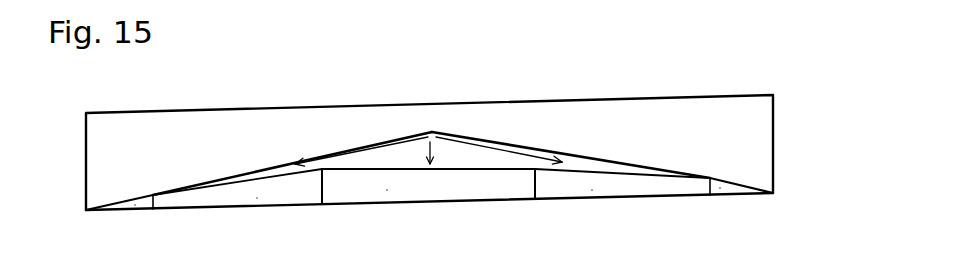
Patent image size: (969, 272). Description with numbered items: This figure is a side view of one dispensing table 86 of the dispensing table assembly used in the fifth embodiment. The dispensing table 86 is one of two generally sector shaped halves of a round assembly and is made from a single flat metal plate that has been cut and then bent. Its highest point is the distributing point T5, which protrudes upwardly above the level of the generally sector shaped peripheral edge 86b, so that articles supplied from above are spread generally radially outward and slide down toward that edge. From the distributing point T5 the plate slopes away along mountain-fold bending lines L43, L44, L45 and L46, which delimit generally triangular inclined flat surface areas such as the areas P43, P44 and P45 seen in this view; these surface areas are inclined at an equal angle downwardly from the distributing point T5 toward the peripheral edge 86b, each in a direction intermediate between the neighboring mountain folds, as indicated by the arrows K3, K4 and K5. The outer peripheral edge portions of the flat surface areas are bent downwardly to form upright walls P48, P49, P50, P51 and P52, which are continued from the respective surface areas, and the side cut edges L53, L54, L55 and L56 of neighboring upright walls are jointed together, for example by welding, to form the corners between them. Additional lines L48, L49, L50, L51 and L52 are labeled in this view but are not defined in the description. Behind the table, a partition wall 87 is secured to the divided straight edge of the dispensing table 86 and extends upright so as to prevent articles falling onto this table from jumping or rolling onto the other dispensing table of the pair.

The dispensing table 86 is at (429, 170).
The sector shaped peripheral edge 86b is at (453, 203).
The partition wall 87 is at (708, 96).
The bending line L43 is at (593, 158).
The bending line L44 is at (508, 150).
The bending line L45 is at (367, 151).
The bending line L46 is at (284, 165).
The right bottom wedge line L48 is at (746, 170).
The right lower line L49 is at (632, 168).
The center horizontal line L50 is at (418, 173).
The left lower line L51 is at (238, 176).
The left bottom wedge line L52 is at (133, 198).
The side cut edge L53 is at (707, 193).
The side cut edge L54 is at (532, 194).
The side cut edge L55 is at (323, 200).
The side cut edge L56 is at (155, 209).
The inclined flat surface area P43 is at (536, 150).
The inclined flat surface area P44 is at (410, 150).
The inclined flat surface area P45 is at (334, 153).
The upright wall P48 is at (720, 188).
The upright wall P49 is at (592, 190).
The upright wall P50 is at (387, 190).
The upright wall P51 is at (257, 198).
The upright wall P52 is at (140, 203).
The arrow indicating direction of inclination K3 is at (566, 186).
The arrow indicating direction of inclination K4 is at (443, 156).
The arrow indicating direction of inclination K5 is at (296, 191).
The distributing point T5 is at (437, 132).